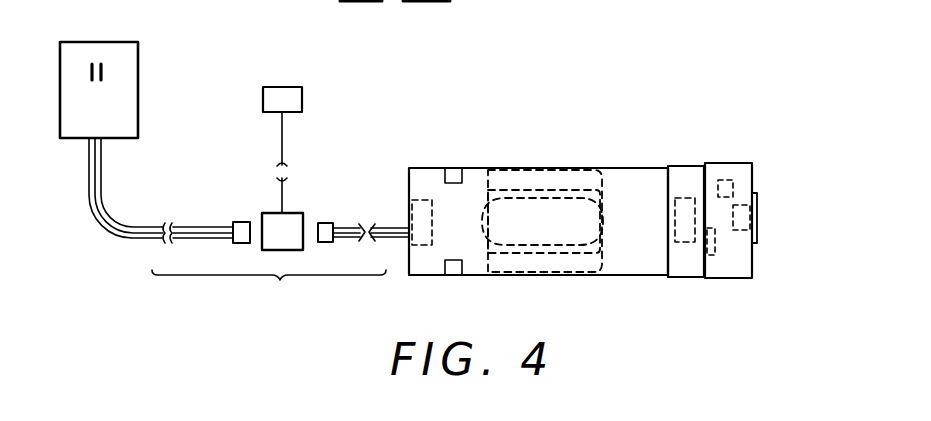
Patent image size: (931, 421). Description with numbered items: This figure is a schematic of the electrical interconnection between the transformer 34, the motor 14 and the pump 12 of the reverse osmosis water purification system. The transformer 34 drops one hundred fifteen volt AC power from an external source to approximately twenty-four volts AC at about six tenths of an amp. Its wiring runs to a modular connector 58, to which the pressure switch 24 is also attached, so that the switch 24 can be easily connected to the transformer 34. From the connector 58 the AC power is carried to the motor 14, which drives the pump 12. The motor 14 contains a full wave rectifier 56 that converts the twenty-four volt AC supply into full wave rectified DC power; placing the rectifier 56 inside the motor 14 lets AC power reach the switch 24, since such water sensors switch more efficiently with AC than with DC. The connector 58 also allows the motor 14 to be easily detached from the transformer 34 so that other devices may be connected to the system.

The pump 12 is at (720, 170).
The motor 14 is at (618, 170).
The pressure switch 24 is at (293, 93).
The transformer 34 is at (155, 142).
The full wave rectifier 56 is at (415, 207).
The modular connector 58 is at (293, 213).